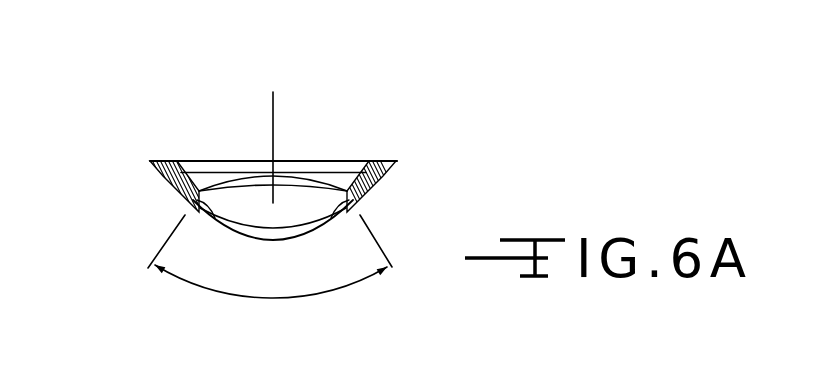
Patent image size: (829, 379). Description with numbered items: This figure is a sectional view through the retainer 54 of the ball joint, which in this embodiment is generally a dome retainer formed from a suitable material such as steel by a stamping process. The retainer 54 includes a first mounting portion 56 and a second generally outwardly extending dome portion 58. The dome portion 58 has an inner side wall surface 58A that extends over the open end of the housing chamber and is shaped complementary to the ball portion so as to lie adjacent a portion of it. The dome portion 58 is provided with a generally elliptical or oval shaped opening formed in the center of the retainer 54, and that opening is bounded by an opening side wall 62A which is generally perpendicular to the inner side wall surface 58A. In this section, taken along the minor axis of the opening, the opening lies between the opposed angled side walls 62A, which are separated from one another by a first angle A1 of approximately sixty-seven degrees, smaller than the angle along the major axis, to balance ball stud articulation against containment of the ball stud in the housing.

The retainer 54 is at (403, 145).
The first mounting portion 56 is at (157, 160).
The dome portion 58 is at (376, 193).
The inner side wall surface 58A is at (198, 190).
The opening side wall 62A is at (202, 220).
The first angle A1 is at (332, 290).